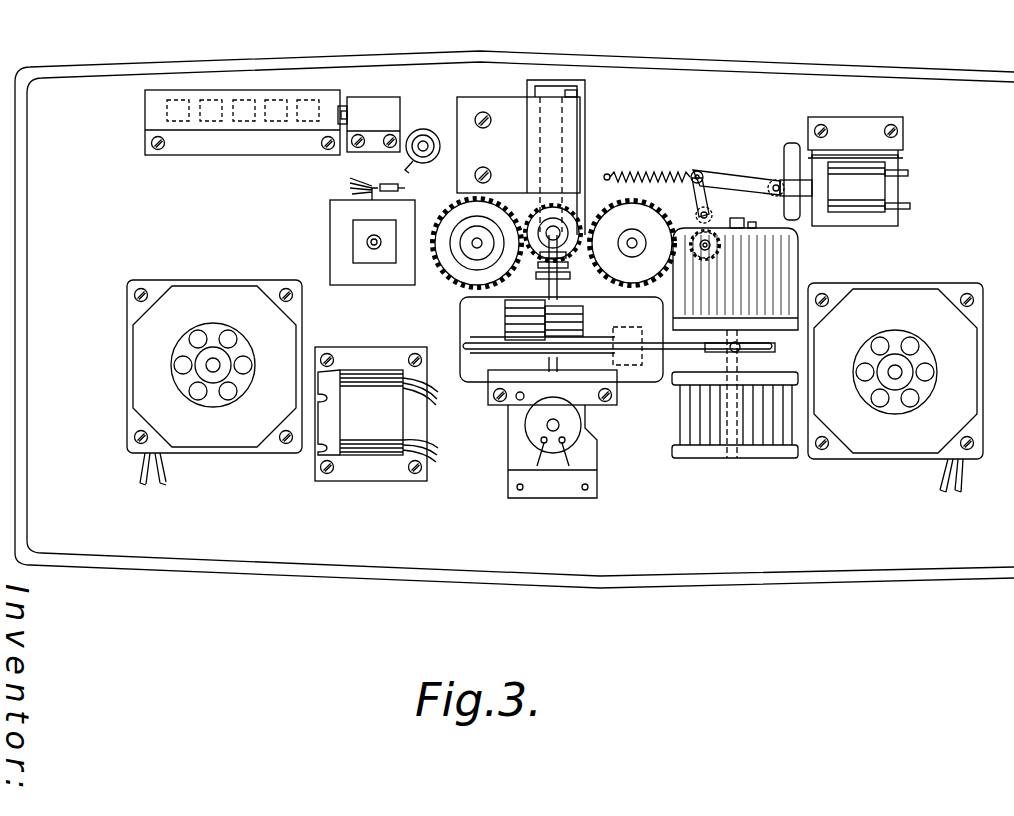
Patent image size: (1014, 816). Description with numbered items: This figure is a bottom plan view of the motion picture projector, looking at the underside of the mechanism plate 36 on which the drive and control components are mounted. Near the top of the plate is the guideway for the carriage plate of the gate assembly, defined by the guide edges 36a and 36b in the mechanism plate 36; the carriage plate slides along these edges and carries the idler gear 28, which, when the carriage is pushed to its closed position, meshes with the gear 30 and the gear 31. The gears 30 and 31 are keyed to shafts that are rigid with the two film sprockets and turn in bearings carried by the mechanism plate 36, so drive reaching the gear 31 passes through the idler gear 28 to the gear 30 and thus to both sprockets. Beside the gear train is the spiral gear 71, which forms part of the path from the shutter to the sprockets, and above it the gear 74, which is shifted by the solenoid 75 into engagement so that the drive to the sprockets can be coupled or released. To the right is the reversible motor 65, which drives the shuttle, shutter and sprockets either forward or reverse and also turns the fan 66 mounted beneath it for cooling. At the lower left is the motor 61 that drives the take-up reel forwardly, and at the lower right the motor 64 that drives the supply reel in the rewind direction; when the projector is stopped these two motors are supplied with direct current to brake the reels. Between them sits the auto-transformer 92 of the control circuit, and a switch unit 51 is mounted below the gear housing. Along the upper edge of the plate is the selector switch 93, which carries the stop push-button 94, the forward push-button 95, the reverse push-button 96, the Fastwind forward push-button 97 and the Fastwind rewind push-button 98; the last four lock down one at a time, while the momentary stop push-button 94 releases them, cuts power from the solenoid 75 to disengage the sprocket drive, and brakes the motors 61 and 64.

The idler gear 28 is at (560, 228).
The gear 30 is at (452, 264).
The gear 31 is at (611, 205).
The mechanism plate 36 is at (247, 542).
The guide edge 36a is at (536, 86).
The guide edge 36b is at (580, 83).
The switch unit 51 is at (582, 443).
The motor 61 is at (225, 432).
The motor 64 is at (888, 434).
The reversible motor 65 is at (790, 272).
The fan 66 is at (717, 432).
The spiral gear 71 is at (548, 228).
The gear 74 is at (724, 190).
The solenoid 75 is at (880, 190).
The auto-transformer 92 is at (375, 450).
The selector switch 93 is at (130, 147).
The stop push-button 94 is at (180, 140).
The forward push-button 95 is at (211, 122).
The reverse push-button 96 is at (246, 122).
The Fastwind forward push-button 97 is at (277, 122).
The Fastwind reverse push-button 98 is at (308, 122).